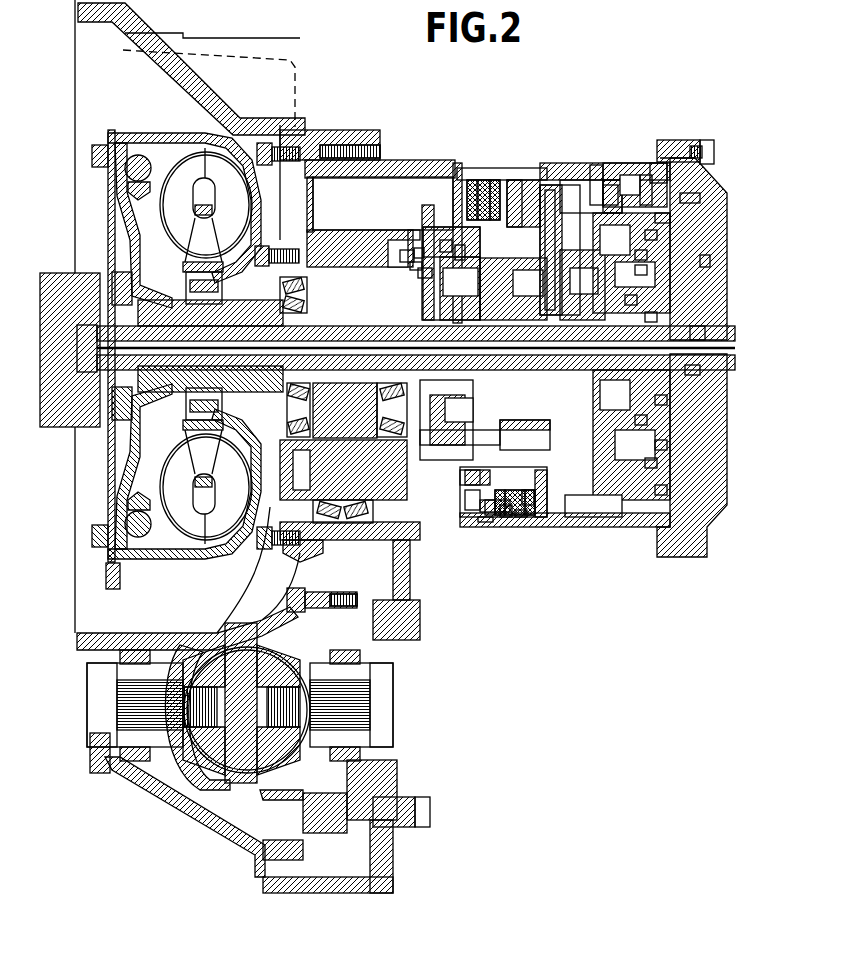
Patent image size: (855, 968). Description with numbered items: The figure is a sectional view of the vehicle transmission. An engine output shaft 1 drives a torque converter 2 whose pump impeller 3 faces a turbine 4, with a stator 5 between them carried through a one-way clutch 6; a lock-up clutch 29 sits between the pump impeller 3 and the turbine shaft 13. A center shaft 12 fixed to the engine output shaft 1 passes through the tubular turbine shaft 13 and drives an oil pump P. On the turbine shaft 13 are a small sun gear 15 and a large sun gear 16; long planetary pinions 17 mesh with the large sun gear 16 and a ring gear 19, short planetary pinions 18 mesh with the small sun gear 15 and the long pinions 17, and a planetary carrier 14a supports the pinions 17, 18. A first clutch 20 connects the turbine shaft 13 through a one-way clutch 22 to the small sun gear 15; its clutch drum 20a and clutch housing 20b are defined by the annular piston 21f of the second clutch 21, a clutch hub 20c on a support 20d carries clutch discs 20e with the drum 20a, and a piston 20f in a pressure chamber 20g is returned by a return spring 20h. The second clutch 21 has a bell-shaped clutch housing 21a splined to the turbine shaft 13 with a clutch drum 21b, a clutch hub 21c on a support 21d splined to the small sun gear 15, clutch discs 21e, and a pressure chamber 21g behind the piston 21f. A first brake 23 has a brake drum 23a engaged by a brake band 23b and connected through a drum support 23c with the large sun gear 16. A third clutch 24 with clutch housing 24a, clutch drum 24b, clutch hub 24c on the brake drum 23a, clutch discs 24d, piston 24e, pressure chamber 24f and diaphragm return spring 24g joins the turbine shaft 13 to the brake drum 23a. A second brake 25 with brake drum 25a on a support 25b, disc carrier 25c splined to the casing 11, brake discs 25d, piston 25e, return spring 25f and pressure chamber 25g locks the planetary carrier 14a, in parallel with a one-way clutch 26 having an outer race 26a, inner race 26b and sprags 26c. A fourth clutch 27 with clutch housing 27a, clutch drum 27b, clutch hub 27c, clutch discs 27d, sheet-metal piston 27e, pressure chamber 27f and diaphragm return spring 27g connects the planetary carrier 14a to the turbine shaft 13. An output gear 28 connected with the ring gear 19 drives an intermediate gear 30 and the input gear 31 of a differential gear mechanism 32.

The engine output shaft 1 is at (58, 428).
The torque converter 2 is at (244, 135).
The pump impeller 3 is at (220, 163).
The turbine 4 is at (189, 160).
The stator 5 is at (213, 198).
The one-way clutch 6 is at (270, 250).
The casing 11 is at (409, 545).
The center shaft 12 is at (342, 455).
The turbine shaft 13 is at (280, 222).
The planetary carrier 14a is at (388, 458).
The small diameter sun gear 15 is at (451, 273).
The large diameter sun gear 16 is at (582, 285).
The long planetary pinions 17 is at (513, 289).
The short planetary pinions 18 is at (446, 420).
The ring gear 19 is at (512, 514).
The first clutch 20 is at (705, 182).
The clutch drum 20a is at (690, 200).
The clutch housing 20b is at (662, 217).
The clutch hub 20c is at (642, 256).
The support 20d is at (632, 300).
The clutch discs 20e is at (652, 236).
The piston 20f is at (707, 258).
The pressure chamber 20g is at (652, 318).
The return spring 20h is at (642, 272).
The second clutch 21 is at (548, 200).
The clutch housing 21a is at (662, 490).
The clutch drum 21b is at (591, 505).
The clutch hub 21c is at (642, 420).
The support 21d is at (662, 400).
The clutch discs 21e is at (652, 462).
The annular piston 21f is at (662, 445).
The pressure chamber 21g is at (695, 370).
The one-way clutch 22 is at (703, 334).
The first brake 23 is at (545, 165).
The brake drum 23a is at (591, 194).
The brake band 23b is at (565, 182).
The drum support 23c is at (520, 180).
The third clutch 24 is at (626, 170).
The clutch housing 24a is at (700, 165).
The clutch drum 24b is at (596, 168).
The clutch hub 24c is at (606, 185).
The clutch discs 24d is at (641, 180).
The piston 24e is at (690, 140).
The pressure chamber 24f is at (713, 150).
The diaphragm type return spring 24g is at (652, 165).
The second brake 25 is at (496, 526).
The brake drum 25a is at (505, 518).
The support 25b is at (519, 518).
The disc carrier 25c is at (527, 518).
The brake discs 25d is at (467, 518).
The piston 25e is at (490, 518).
The return spring 25f is at (461, 483).
The pressure chamber 25g is at (483, 522).
The second one-way clutch 26 is at (490, 178).
The outer race 26a is at (492, 178).
The inner race 26b is at (477, 178).
The sprags 26c is at (506, 180).
The fourth clutch 27 is at (430, 225).
The clutch housing 27a is at (405, 255).
The clutch drum 27b is at (460, 253).
The clutch hub 27c is at (420, 252).
The clutch discs 27d is at (447, 245).
The piston 27e is at (430, 270).
The pressure chamber 27f is at (415, 265).
The diaphragm type return spring 27g is at (413, 237).
The output gear 28 is at (344, 302).
The lock-up clutch 29 is at (146, 158).
The intermediate gear 30 is at (288, 545).
The input gear 31 is at (347, 575).
The differential gear mechanism 32 is at (200, 792).
The oil pump P is at (718, 349).